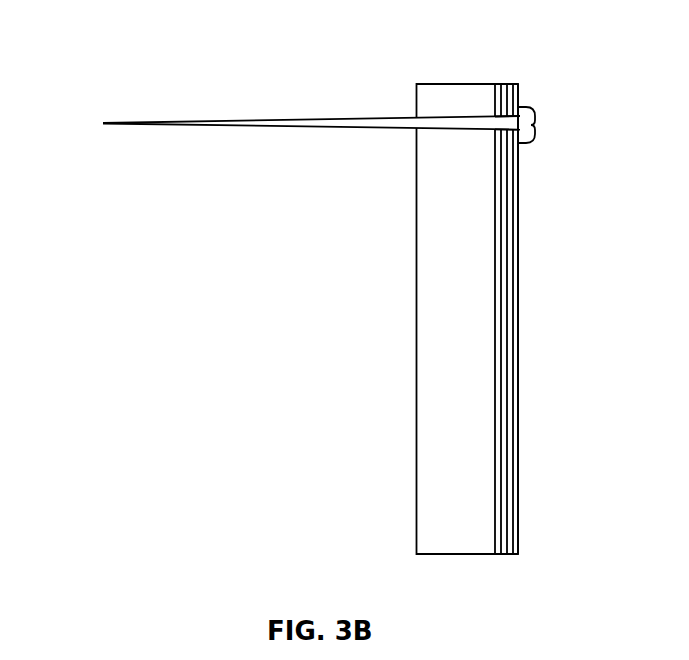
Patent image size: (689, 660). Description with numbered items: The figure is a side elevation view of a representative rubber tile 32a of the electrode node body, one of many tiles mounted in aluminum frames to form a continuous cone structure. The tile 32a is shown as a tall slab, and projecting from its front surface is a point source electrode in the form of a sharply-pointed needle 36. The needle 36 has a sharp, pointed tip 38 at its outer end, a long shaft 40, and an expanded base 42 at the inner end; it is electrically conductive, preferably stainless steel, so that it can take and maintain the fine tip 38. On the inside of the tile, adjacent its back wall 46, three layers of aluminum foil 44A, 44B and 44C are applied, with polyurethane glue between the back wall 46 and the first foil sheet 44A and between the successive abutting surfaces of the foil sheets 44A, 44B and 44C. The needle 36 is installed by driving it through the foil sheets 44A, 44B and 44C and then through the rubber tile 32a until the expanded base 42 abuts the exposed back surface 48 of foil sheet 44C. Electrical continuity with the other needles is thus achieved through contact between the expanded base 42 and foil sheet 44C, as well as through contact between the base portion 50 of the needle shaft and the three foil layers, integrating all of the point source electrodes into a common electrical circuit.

The representative tile 32a is at (440, 482).
The needle 36 is at (341, 120).
The tip 38 is at (275, 131).
The shaft 40 is at (387, 126).
The expanded base 42 is at (530, 127).
The first foil sheet 44A is at (498, 84).
The second foil sheet 44B is at (507, 84).
The third foil sheet 44C is at (518, 91).
The back wall 46 is at (497, 497).
The exposed back surface 48 is at (518, 280).
The base portion of the needle shaft 50 is at (503, 123).